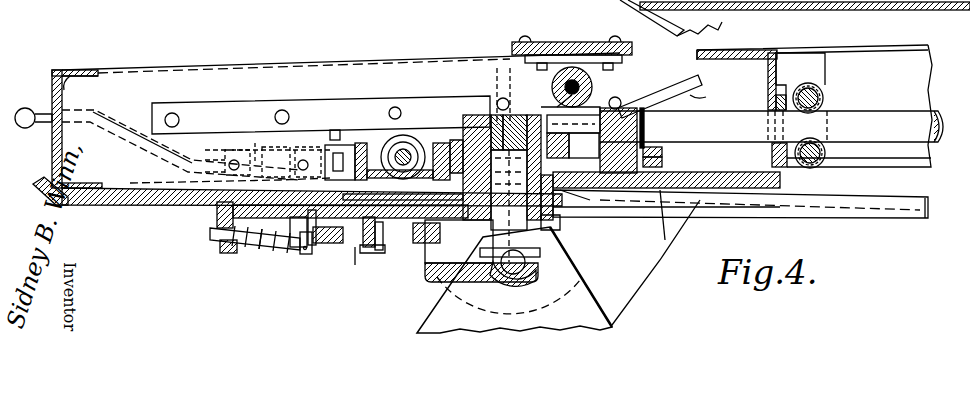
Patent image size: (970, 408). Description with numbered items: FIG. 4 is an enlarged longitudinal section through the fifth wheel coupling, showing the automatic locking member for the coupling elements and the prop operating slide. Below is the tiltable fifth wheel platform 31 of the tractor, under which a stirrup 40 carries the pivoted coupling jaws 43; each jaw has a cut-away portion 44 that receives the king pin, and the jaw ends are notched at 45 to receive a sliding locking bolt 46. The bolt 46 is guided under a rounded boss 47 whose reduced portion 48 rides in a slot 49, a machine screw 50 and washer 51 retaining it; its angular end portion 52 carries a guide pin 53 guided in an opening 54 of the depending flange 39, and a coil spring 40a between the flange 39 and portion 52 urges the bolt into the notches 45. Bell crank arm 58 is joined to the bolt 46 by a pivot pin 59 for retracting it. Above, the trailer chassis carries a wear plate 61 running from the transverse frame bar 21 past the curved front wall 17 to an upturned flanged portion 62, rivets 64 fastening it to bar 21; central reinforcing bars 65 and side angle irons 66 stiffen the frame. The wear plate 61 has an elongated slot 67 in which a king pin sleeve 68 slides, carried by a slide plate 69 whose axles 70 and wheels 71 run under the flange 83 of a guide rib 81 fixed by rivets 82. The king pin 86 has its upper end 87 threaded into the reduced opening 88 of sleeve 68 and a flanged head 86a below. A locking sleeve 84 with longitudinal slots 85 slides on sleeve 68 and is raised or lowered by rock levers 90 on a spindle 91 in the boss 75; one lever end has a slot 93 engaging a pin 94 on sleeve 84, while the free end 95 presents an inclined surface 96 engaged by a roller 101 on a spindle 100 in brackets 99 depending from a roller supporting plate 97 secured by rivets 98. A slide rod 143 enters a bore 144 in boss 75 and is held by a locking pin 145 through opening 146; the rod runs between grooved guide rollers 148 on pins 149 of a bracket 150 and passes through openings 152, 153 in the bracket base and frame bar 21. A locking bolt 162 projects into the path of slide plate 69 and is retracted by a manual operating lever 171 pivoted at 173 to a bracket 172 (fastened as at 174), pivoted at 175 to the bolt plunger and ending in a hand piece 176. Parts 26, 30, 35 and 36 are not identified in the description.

The curved front wall 17 is at (74, 72).
The transverse frame bar 21 is at (755, 48).
The inclined frame member 26 is at (590, 305).
The link 30 is at (600, 240).
The tiltable fifth wheel platform 31 is at (665, 195).
The rail end 35 is at (853, 193).
The rail 36 is at (745, 202).
The depending flange 39 is at (225, 254).
The stirrup 40 is at (440, 300).
The coil spring 40a is at (262, 248).
The coupling jaws 43 is at (480, 282).
The cut-away portion 44 is at (556, 226).
The notches 45 is at (460, 240).
The sliding locking bolt 46 is at (325, 250).
The rounded boss 47 is at (388, 220).
The reduced portion 48 is at (375, 250).
The slot 49 is at (390, 250).
The machine screw 50 is at (368, 255).
The washer 51 is at (358, 265).
The angular end portion 52 is at (300, 250).
The guide pin 53 is at (272, 250).
The opening 54 is at (217, 220).
The bell crank arm 58 is at (300, 248).
The pivot pin 59 is at (310, 255).
The wear plate 61 is at (140, 206).
The upturned flanged portion 62 is at (42, 208).
The rivets 64 is at (83, 183).
The central reinforcing bars 65 is at (173, 72).
The angle irons 66 is at (868, 8).
The elongated slot 67 is at (436, 143).
The king pin sleeve 68 is at (465, 190).
The slide plate 69 is at (375, 170).
The axles 70 is at (406, 150).
The supporting wheels 71 is at (393, 107).
The enlarged boss 75 is at (592, 150).
The guide rib 81 is at (227, 110).
The rivets 82 is at (282, 110).
The inwardly directed flange 83 is at (246, 132).
The locking sleeve 84 is at (457, 130).
The longitudinal slots 85 is at (575, 200).
The king pin 86 is at (510, 206).
The flanged head 86a is at (540, 250).
The upper end of king pin 87 is at (525, 113).
The threaded reduced opening 88 is at (492, 115).
The rock levers 90 is at (560, 110).
The spindle 91 is at (622, 108).
The slot 93 is at (493, 94).
The pin 94 is at (507, 94).
The free ends of rock levers 95 is at (702, 97).
The inclined surface 96 is at (660, 95).
The roller supporting plate 97 is at (596, 44).
The rivets 98 is at (540, 43).
The roller-supporting brackets 99 is at (620, 106).
The spindle 100 is at (572, 67).
The roller 101 is at (545, 100).
The slide rod 143 is at (882, 103).
The bore 144 is at (662, 153).
The transverse locking pin 145 is at (642, 108).
The opening 146 is at (662, 164).
The guide rollers 148 is at (822, 88).
The pins 149 is at (812, 88).
The bracket 150 is at (786, 84).
The opening 152 is at (790, 168).
The opening 153 is at (768, 94).
The locking member 162 is at (335, 130).
The manual operating lever 171 is at (40, 114).
The bracket 172 is at (264, 159).
The pivot 173 is at (257, 142).
The rod 174 is at (190, 181).
The pivot 175 is at (340, 145).
The manual hand piece 176 is at (22, 109).